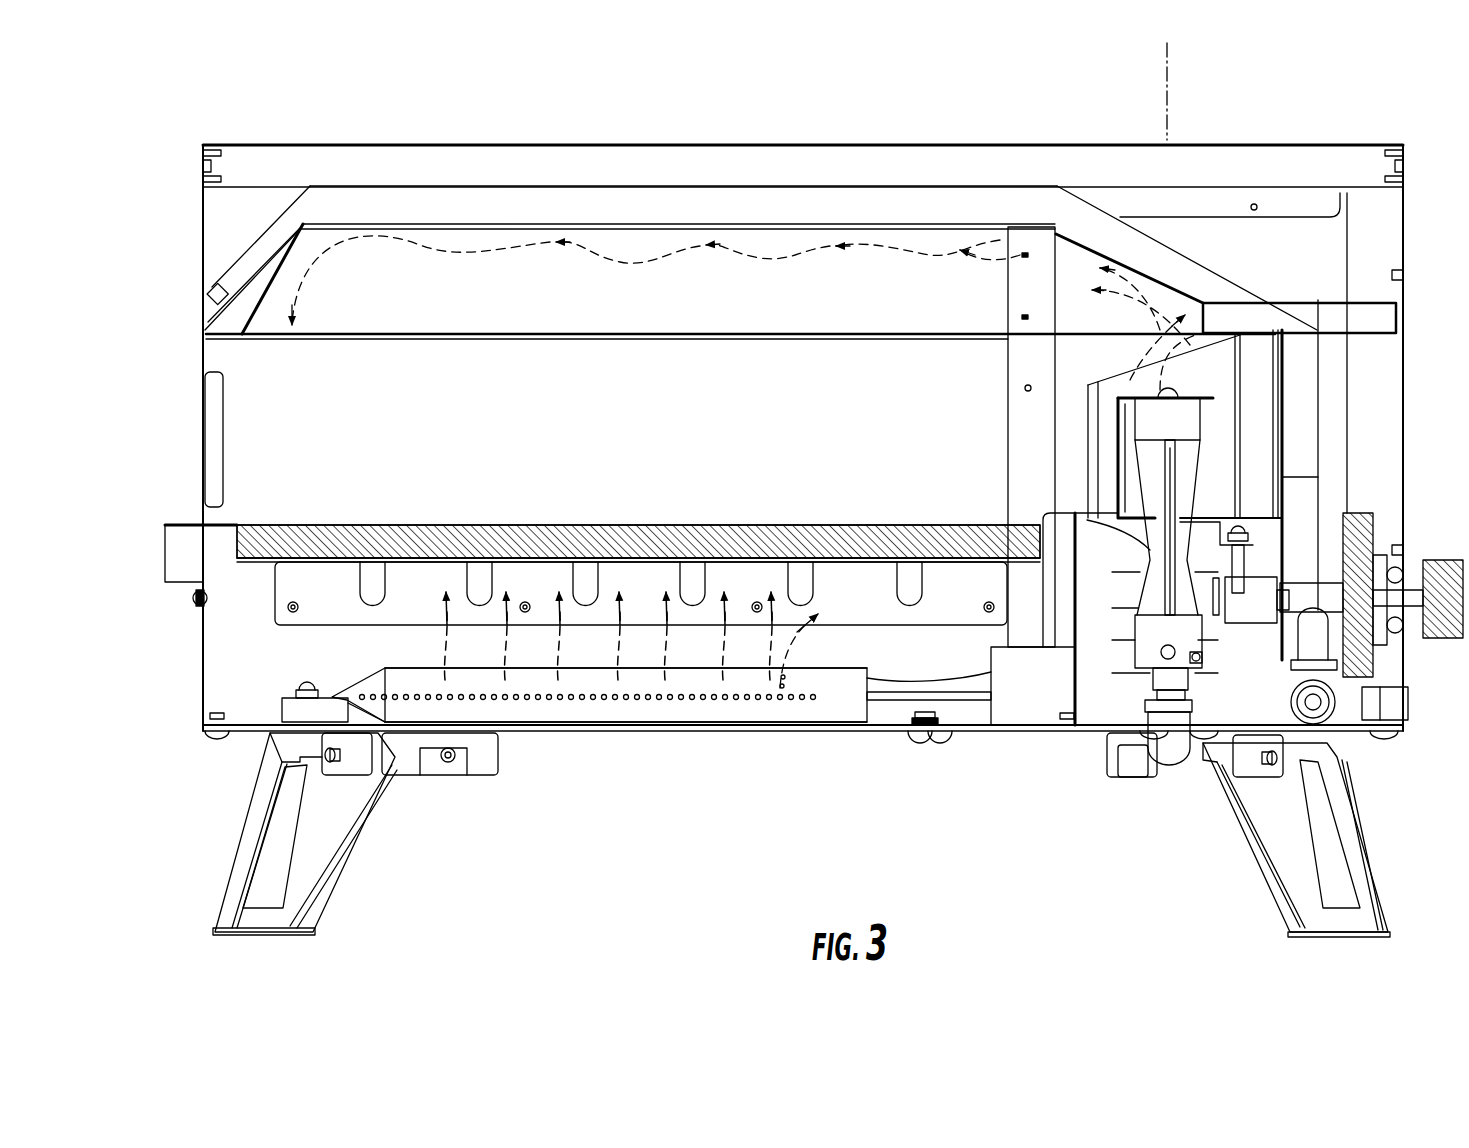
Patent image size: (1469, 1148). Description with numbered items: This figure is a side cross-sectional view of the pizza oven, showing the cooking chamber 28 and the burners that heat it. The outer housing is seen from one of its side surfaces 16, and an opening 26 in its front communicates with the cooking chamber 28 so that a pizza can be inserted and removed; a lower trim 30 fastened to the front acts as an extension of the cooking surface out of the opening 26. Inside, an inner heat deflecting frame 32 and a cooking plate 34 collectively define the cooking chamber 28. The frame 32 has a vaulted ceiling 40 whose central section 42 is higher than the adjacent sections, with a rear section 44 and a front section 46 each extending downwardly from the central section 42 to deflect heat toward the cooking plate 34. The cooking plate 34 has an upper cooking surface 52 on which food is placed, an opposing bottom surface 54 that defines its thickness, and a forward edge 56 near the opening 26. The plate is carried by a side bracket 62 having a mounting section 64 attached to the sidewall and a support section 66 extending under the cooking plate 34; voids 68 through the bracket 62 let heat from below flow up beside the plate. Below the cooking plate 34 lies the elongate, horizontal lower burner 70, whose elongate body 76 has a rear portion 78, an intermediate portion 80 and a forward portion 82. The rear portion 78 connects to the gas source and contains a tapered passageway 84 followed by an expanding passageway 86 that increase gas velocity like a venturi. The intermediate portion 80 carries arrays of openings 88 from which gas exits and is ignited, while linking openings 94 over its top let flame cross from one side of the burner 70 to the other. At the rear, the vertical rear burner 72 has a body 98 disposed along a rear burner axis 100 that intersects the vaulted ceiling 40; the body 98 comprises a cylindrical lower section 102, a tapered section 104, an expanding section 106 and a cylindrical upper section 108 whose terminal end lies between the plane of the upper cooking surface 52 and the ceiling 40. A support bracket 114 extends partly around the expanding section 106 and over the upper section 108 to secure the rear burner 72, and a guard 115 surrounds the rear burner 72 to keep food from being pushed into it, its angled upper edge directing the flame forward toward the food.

The side surface 16 is at (1405, 708).
The opening 26 is at (213, 420).
The cooking chamber 28 is at (632, 450).
The lower trim 30 is at (168, 565).
The inner heat deflecting frame 32 is at (492, 245).
The cooking plate 34 is at (480, 525).
The vaulted ceiling 40 is at (890, 245).
The central section 42 is at (630, 240).
The rear section 44 is at (1135, 268).
The front section 46 is at (257, 263).
The upper cooking surface 52 is at (785, 525).
The bottom surface 54 is at (254, 563).
The forward edge 56 is at (237, 542).
The side bracket 62 is at (300, 632).
The mounting section 64 is at (330, 612).
The support section 66 is at (935, 567).
The void 68 is at (912, 572).
The lower burner 70 is at (828, 715).
The rear burner 72 is at (1222, 414).
The elongate body 76 is at (552, 712).
The rear portion 78 is at (948, 712).
The intermediate portion 80 is at (626, 739).
The forward portion 82 is at (372, 703).
The tapered passageway 84 is at (990, 672).
The expanding passageway 86 is at (870, 675).
The openings 88 is at (672, 712).
The linking openings 94 is at (782, 690).
The body 98 is at (1184, 495).
The rear burner axis 100 is at (1167, 88).
The cylindrical lower section 102 is at (1152, 650).
The tapered section 104 is at (1110, 592).
The expanding section 106 is at (1150, 540).
The cylindrical upper section 108 is at (1195, 425).
The support bracket 114 is at (1118, 445).
The guard 115 is at (1090, 393).